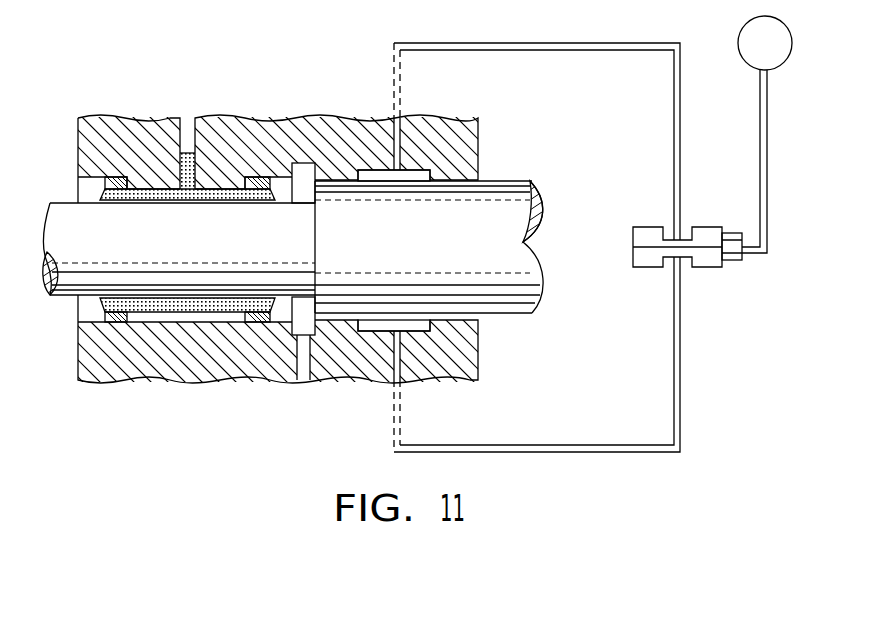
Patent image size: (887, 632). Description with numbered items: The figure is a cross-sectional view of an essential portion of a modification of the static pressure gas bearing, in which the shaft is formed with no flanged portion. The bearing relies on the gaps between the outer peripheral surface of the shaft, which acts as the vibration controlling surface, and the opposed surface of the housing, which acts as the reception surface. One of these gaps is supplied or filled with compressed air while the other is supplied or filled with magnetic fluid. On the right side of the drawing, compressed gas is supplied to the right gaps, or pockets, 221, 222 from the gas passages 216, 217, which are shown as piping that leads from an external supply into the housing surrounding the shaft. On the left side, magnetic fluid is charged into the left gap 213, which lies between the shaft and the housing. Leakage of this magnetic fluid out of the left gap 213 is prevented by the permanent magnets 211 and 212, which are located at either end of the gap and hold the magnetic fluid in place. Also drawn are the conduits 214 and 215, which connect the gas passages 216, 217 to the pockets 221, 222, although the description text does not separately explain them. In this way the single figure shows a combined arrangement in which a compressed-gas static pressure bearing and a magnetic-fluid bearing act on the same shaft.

The permanent magnet 211 is at (117, 177).
The permanent magnet 212 is at (257, 177).
The left gap 213 is at (187, 190).
The pipe 214 is at (393, 365).
The pipe 215 is at (393, 132).
The gas passage 216 is at (576, 453).
The gas passage 217 is at (602, 47).
The right gap 221 is at (380, 325).
The right gap 222 is at (403, 175).